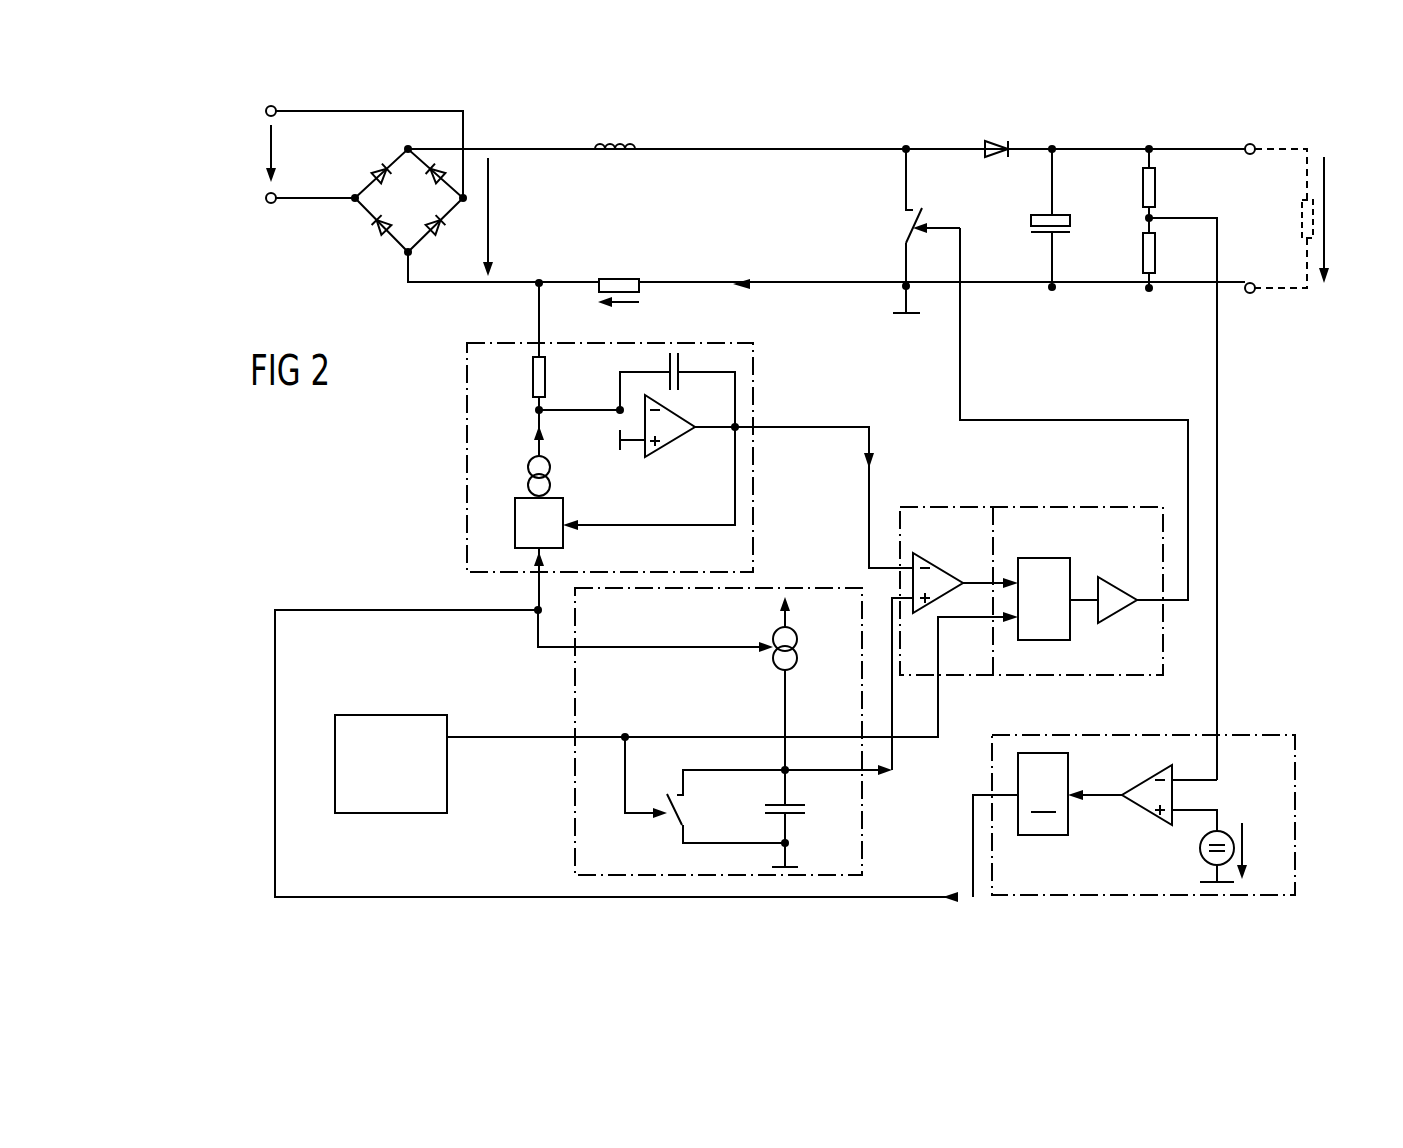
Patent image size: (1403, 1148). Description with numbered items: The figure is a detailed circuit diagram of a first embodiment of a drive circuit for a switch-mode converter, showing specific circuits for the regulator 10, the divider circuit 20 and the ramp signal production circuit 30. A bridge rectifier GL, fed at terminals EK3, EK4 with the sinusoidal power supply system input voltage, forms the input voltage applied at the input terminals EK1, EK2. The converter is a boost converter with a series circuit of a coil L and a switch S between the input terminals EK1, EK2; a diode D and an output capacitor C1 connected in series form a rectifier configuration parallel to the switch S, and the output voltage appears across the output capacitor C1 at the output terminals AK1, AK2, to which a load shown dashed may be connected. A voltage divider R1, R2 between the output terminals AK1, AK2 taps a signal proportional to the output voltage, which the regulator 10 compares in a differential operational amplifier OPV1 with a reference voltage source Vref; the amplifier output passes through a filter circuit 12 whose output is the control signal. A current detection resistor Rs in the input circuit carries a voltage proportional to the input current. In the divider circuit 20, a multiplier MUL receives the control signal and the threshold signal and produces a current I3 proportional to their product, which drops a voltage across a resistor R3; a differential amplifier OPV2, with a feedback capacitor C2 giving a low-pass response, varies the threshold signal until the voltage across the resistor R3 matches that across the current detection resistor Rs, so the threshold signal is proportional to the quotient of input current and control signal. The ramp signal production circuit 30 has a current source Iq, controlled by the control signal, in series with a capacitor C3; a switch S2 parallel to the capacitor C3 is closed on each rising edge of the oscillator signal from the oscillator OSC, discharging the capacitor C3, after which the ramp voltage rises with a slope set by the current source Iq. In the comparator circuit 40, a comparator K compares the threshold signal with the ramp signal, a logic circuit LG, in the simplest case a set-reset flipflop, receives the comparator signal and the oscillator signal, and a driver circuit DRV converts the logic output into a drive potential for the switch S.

The regulator 10 is at (1295, 795).
The filter circuit 12 is at (1040, 835).
The divider circuit 20 is at (753, 372).
The ramp signal production circuit 30 is at (862, 855).
The comparator circuit 40 is at (1063, 507).
The input terminal EK1 is at (816, 134).
The input terminal EK2 is at (804, 269).
The input terminal EK3 is at (340, 149).
The input terminal EK4 is at (302, 215).
The bridge rectifier GL is at (272, 280).
The coil L is at (617, 153).
The current detection resistor Rs is at (625, 279).
The switch S is at (903, 228).
The diode D is at (990, 160).
The output capacitor C1 is at (1075, 225).
The voltage divider resistor R1 is at (1165, 142).
The voltage divider resistor R2 is at (1155, 250).
The output terminal AK1 is at (1255, 136).
The output terminal AK2 is at (1255, 307).
The resistor R3 is at (533, 372).
The capacitor C2 is at (680, 378).
The differential amplifier OPV2 is at (672, 460).
The current I3 is at (530, 435).
The multiplier MUL is at (440, 510).
The comparator K is at (938, 560).
The logic circuit LG is at (1035, 558).
The driver circuit DRV is at (1120, 618).
The oscillator OSC is at (392, 715).
The current source Iq is at (797, 665).
The switch S2 is at (688, 810).
The capacitor C3 is at (805, 812).
The differential operational amplifier OPV1 is at (1135, 818).
The reference voltage source Vref is at (1245, 852).